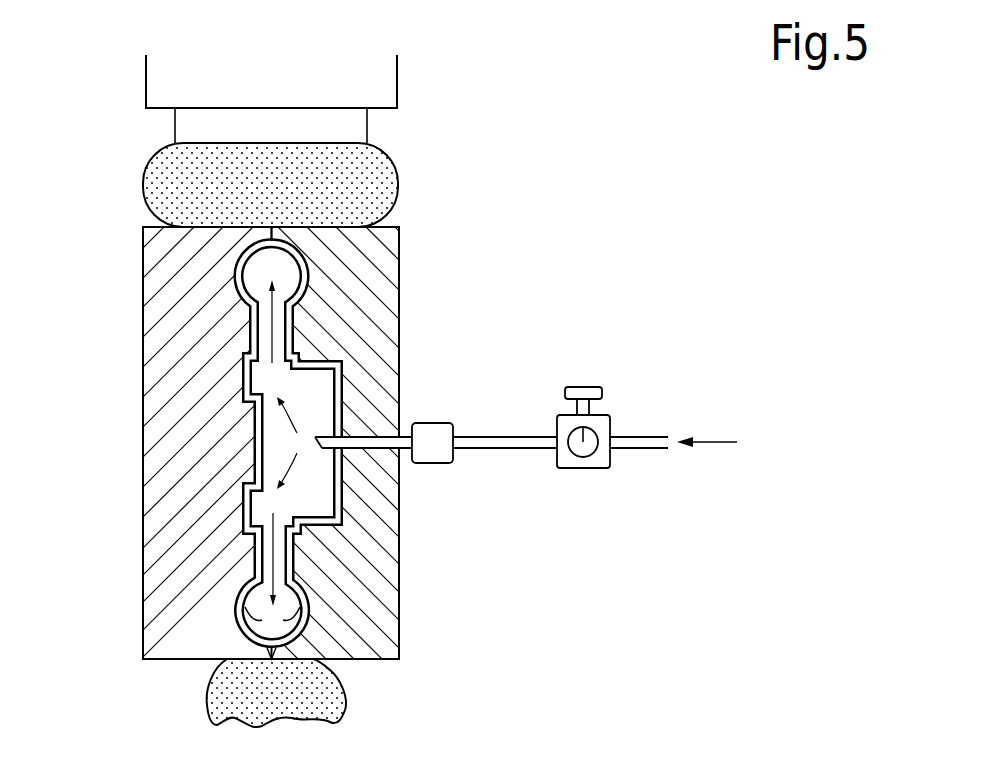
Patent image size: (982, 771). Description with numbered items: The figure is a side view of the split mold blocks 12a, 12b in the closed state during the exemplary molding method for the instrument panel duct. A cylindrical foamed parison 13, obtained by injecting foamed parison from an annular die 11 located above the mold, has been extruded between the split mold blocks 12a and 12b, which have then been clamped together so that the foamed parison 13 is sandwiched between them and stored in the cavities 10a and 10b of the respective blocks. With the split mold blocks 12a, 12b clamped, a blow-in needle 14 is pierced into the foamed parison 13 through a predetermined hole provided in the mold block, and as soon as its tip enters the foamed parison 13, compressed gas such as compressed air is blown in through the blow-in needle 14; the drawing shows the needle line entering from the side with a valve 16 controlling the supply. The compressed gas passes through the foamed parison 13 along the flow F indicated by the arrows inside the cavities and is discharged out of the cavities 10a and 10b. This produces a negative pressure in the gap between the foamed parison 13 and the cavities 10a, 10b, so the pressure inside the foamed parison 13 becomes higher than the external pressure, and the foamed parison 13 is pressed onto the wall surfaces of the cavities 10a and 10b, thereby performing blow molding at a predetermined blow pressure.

The annular die 11 is at (163, 83).
The foamed parison 13 is at (398, 182).
The split mold block 12a is at (152, 247).
The split mold block 12b is at (387, 250).
The blow-in needle 14 is at (348, 437).
The valve 16 is at (583, 470).
The fluid flow F is at (273, 327).
The cavity 10a is at (249, 633).
The cavity 10b is at (297, 633).